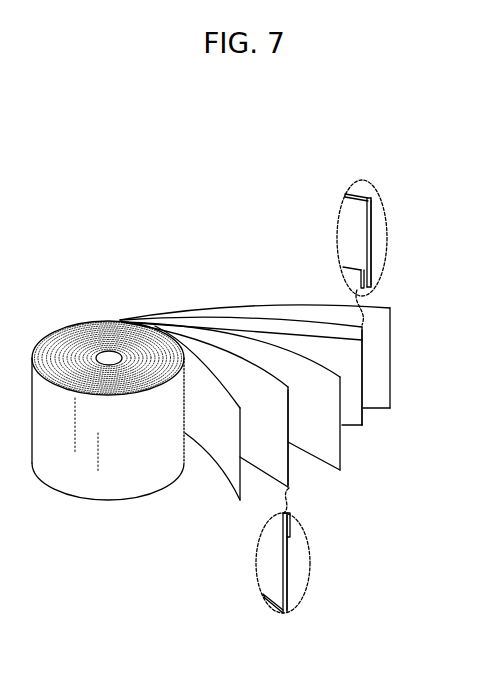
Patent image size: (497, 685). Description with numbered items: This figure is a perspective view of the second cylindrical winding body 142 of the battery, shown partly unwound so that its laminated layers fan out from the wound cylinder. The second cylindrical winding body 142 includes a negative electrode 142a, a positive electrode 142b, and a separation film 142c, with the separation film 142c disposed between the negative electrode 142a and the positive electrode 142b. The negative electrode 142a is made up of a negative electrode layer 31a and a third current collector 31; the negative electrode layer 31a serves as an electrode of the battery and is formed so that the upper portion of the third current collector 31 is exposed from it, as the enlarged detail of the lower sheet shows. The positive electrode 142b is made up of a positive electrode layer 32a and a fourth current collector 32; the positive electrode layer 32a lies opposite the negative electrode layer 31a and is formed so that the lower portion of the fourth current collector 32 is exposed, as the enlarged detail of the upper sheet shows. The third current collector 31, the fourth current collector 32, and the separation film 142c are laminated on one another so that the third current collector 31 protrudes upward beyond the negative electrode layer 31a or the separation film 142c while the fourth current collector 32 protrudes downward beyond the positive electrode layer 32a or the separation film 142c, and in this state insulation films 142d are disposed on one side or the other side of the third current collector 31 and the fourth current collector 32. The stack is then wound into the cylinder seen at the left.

The second cylindrical winding body 142 is at (90, 315).
The negative electrode 142a is at (294, 466).
The positive electrode 142b is at (381, 238).
The separation film 142c is at (342, 458).
The insulation films 142d is at (388, 348).
The third current collector 31 is at (268, 463).
The negative electrode layer 31a is at (292, 524).
The fourth current collector 32 is at (250, 327).
The positive electrode layer 32a is at (368, 280).